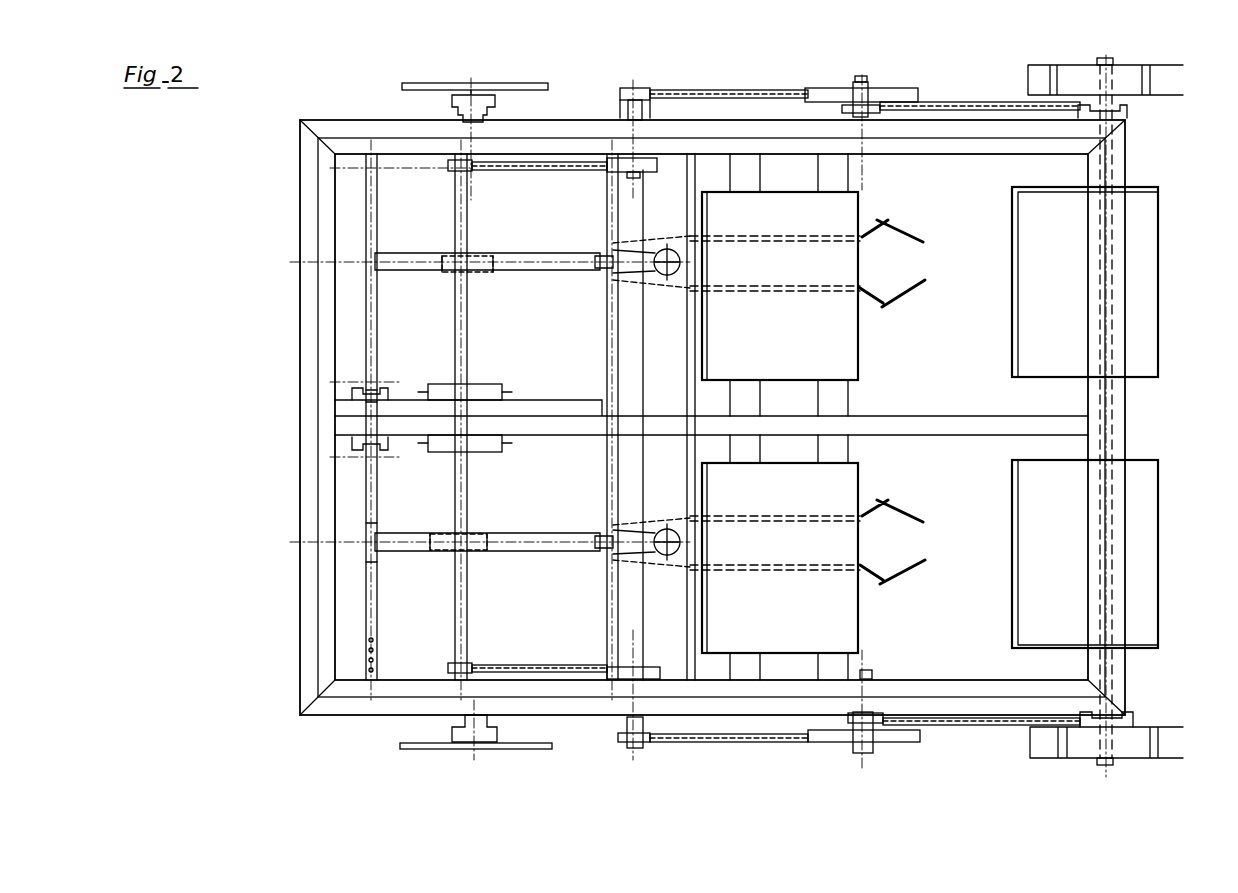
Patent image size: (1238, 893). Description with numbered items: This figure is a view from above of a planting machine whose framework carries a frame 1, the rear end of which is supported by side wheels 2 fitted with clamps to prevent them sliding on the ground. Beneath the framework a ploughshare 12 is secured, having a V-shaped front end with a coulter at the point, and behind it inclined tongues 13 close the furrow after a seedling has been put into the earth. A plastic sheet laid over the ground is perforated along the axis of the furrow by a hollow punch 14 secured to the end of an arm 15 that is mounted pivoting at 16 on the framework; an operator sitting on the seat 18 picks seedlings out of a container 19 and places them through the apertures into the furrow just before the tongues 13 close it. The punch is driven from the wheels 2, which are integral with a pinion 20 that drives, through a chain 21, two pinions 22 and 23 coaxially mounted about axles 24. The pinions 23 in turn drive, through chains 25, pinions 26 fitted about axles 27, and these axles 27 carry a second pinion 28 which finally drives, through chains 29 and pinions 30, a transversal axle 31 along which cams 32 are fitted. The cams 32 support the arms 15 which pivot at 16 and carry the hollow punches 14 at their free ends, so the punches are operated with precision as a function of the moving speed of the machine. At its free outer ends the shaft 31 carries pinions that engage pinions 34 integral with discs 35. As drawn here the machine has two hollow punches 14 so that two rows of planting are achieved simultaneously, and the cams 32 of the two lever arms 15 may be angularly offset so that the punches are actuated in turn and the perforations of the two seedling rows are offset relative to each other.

The frame 1 is at (912, 425).
The side wheels 2 is at (1040, 82).
The ploughshare 12 is at (678, 565).
The tongues 13 is at (902, 282).
The hollow punch 14 is at (678, 275).
The arm 15 is at (405, 270).
The pivot 16 is at (357, 212).
The seat 18 is at (850, 345).
The container 19 is at (1158, 303).
The pinion 20 is at (1122, 105).
The chain 21 is at (950, 104).
The pinion 22 is at (828, 104).
The pinion 23 is at (840, 97).
The axles 24 is at (868, 90).
The chains 25 is at (748, 90).
The pinions 26 is at (640, 112).
The axles 27 is at (662, 96).
The second pinion 28 is at (620, 165).
The chains 29 is at (572, 165).
The pinions 30 is at (452, 167).
The transversal axle 31 is at (432, 553).
The cams 32 is at (445, 271).
The pinions 34 is at (505, 748).
The discs 35 is at (448, 748).